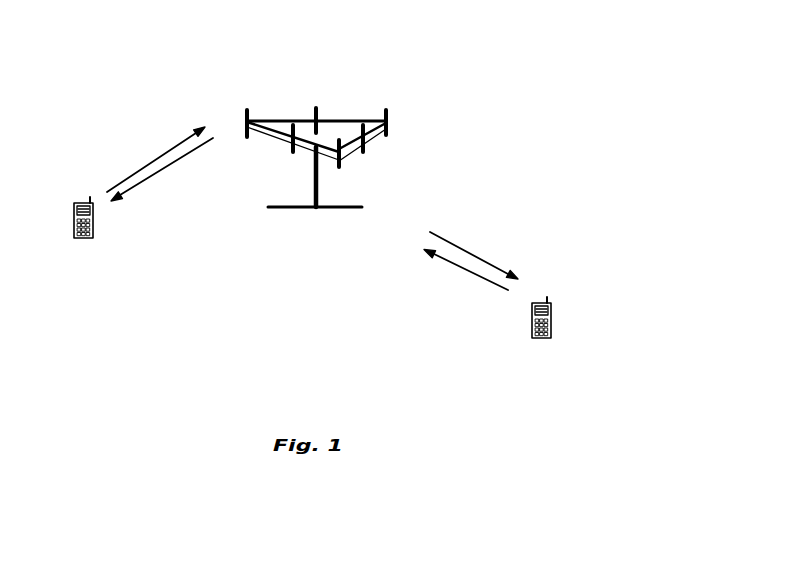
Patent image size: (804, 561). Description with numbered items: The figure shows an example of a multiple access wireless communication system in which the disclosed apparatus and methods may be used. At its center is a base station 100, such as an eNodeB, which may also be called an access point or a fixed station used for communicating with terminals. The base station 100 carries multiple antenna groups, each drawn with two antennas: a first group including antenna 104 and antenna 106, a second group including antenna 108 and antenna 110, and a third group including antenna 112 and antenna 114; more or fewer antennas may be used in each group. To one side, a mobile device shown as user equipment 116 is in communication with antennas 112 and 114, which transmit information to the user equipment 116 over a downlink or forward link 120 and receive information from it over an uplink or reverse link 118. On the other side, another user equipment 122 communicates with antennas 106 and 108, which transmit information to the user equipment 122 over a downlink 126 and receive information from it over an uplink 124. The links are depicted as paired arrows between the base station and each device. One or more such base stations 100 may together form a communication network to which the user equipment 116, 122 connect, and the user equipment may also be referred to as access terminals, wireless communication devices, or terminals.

The base station 100 is at (317, 176).
The antenna 104 is at (339, 167).
The antenna 106 is at (363, 152).
The antenna 108 is at (388, 127).
The antenna 110 is at (317, 108).
The antenna 112 is at (247, 117).
The antenna 114 is at (293, 152).
The user equipment 116 is at (88, 202).
The reverse link 118 is at (154, 158).
The forward link 120 is at (168, 166).
The user equipment 122 is at (546, 299).
The uplink 124 is at (472, 273).
The downlink 126 is at (492, 264).